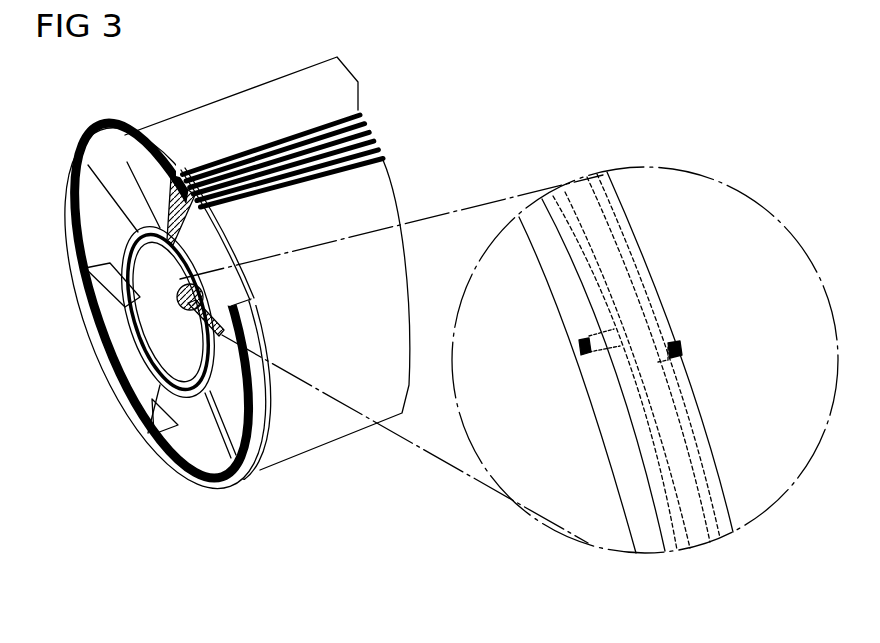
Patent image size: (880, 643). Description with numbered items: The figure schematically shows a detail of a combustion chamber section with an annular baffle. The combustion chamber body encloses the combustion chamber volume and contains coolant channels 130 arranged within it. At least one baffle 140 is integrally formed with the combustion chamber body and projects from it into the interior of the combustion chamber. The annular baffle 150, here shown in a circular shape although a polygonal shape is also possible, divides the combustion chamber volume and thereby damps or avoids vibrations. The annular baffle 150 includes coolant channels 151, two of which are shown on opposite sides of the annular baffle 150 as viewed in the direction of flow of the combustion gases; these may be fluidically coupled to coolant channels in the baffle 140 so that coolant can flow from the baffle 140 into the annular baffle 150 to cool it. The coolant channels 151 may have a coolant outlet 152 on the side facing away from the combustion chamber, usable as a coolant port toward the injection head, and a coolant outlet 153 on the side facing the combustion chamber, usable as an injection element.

The coolant channels 130 is at (352, 133).
The baffle 140 is at (182, 207).
The annular baffle 150 is at (167, 385).
The coolant channel 151 is at (720, 540).
The coolant outlet 152 is at (186, 297).
The coolant outlet 153 is at (680, 347).